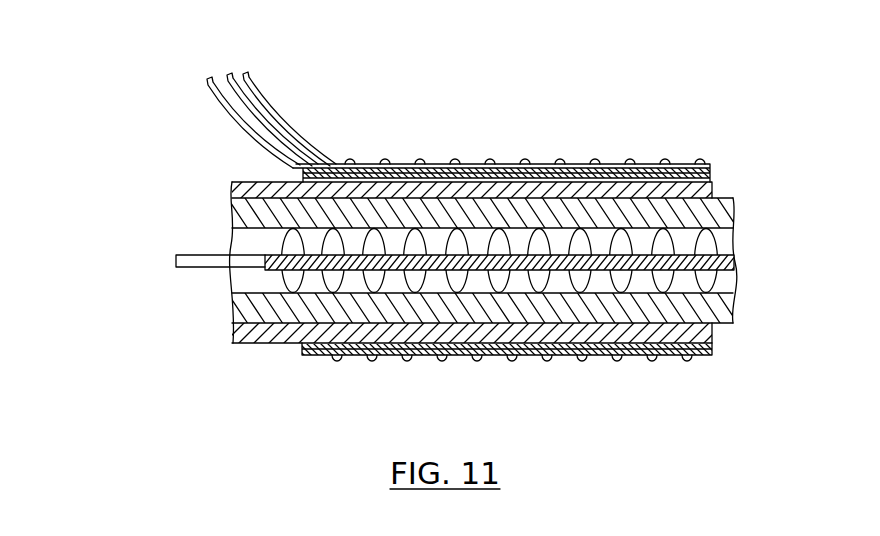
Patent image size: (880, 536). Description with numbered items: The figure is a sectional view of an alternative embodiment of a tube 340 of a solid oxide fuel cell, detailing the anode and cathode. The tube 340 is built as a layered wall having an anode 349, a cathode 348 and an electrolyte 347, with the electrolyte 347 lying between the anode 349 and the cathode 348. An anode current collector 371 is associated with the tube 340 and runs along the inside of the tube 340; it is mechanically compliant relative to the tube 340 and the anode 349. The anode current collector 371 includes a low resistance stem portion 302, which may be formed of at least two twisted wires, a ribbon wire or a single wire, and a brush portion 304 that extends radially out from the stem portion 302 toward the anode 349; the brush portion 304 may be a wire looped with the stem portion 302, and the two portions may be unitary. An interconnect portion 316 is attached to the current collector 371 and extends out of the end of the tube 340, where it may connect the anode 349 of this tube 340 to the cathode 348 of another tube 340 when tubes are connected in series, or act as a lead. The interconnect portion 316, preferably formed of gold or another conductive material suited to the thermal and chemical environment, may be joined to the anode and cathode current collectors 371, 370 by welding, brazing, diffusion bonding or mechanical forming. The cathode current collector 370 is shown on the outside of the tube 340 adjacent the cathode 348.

The tube 340 is at (473, 234).
The cathode current collector 370 is at (266, 103).
The cathode 348 is at (712, 177).
The electrolyte 347 is at (711, 188).
The anode 349 is at (727, 222).
The anode current collector 371 is at (733, 263).
The stem portion 302 is at (730, 273).
The brush portion 304 is at (285, 243).
The interconnect portion 316 is at (192, 266).